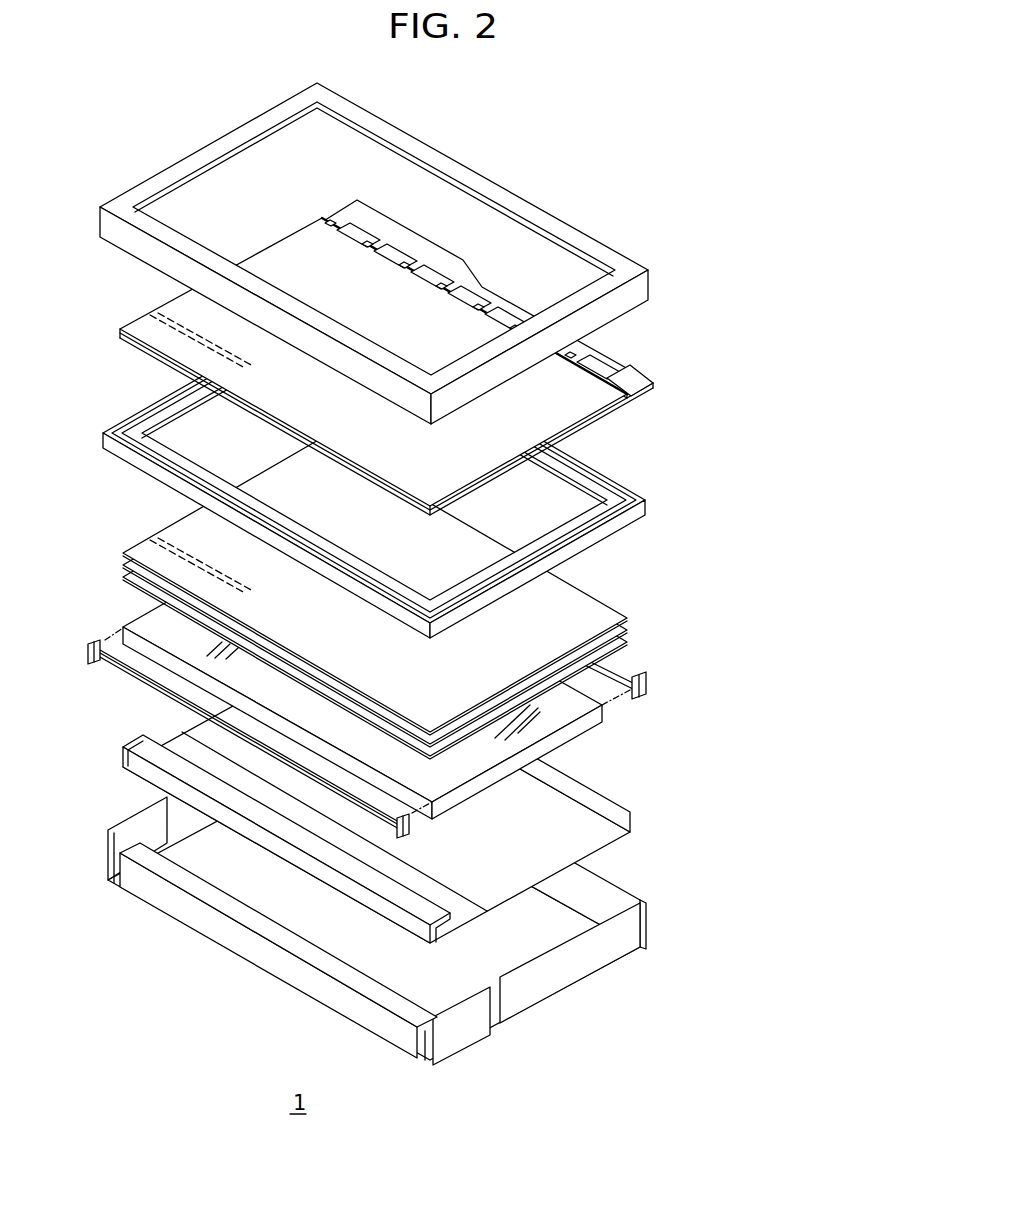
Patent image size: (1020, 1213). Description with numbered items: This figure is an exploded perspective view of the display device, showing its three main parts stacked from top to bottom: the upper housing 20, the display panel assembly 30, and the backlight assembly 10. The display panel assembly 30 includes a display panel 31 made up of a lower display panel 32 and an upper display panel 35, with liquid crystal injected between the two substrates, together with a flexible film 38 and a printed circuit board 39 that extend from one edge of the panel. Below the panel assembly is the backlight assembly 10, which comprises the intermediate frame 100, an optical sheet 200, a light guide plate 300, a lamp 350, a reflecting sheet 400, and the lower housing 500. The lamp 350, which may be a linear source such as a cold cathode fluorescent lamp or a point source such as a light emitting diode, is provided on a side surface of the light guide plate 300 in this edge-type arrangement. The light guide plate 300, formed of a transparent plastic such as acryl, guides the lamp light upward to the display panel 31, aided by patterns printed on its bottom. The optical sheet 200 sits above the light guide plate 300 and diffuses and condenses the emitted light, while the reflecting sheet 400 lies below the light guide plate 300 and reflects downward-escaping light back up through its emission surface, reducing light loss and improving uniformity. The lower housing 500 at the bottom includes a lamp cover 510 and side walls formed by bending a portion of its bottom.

The backlight assembly 10 is at (444, 688).
The upper housing 20 is at (660, 292).
The display panel assembly 30 is at (443, 357).
The display panel 31 is at (423, 357).
The lower display panel 32 is at (563, 418).
The upper display panel 35 is at (593, 428).
The flexible film 38 is at (612, 375).
The printed circuit board 39 is at (612, 356).
The intermediate frame 100 is at (762, 905).
The optical sheet 200 is at (640, 612).
The light guide plate 300 is at (582, 725).
The lamp 350 is at (648, 683).
The reflecting sheet 400 is at (656, 811).
The lower housing 500 is at (435, 891).
The lamp cover 510 is at (362, 1018).